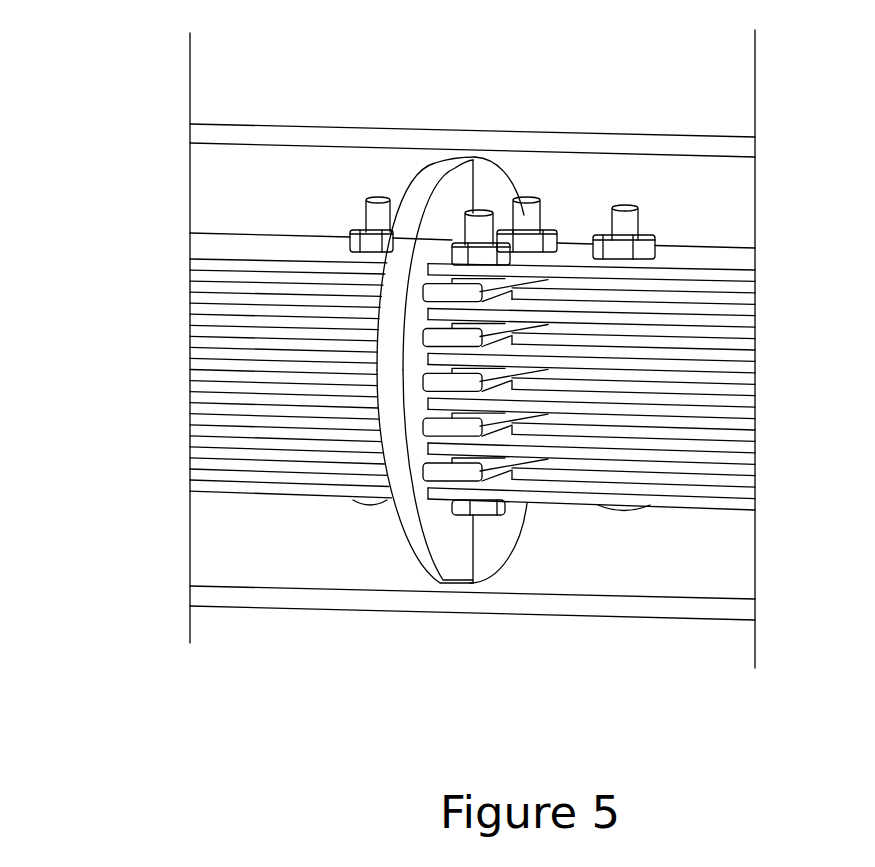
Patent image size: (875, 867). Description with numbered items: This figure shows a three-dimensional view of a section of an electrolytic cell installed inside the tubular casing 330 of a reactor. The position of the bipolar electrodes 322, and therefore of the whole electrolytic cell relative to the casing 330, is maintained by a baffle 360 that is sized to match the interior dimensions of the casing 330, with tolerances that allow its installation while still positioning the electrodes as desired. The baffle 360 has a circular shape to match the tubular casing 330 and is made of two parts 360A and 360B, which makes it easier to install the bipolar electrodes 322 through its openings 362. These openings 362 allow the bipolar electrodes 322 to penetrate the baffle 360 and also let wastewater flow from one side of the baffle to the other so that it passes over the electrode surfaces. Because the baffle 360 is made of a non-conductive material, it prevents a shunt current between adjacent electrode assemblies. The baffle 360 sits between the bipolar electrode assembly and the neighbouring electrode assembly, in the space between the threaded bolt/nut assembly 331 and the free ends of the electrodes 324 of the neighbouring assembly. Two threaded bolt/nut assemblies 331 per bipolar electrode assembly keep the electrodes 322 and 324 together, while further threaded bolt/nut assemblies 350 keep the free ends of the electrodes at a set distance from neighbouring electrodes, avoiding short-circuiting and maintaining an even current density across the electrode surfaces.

The bipolar electrodes 322 is at (300, 465).
The electrodes of the neighbouring electrode assembly 324 is at (242, 245).
The casing 330 is at (638, 605).
The threaded bolt/nut assembly 331 is at (519, 212).
The threaded bolt/nut assemblies 350 is at (383, 217).
The baffle 360 is at (421, 366).
The first part of the baffle 360A is at (447, 220).
The second part of the baffle 360B is at (480, 227).
The openings 362 is at (432, 500).